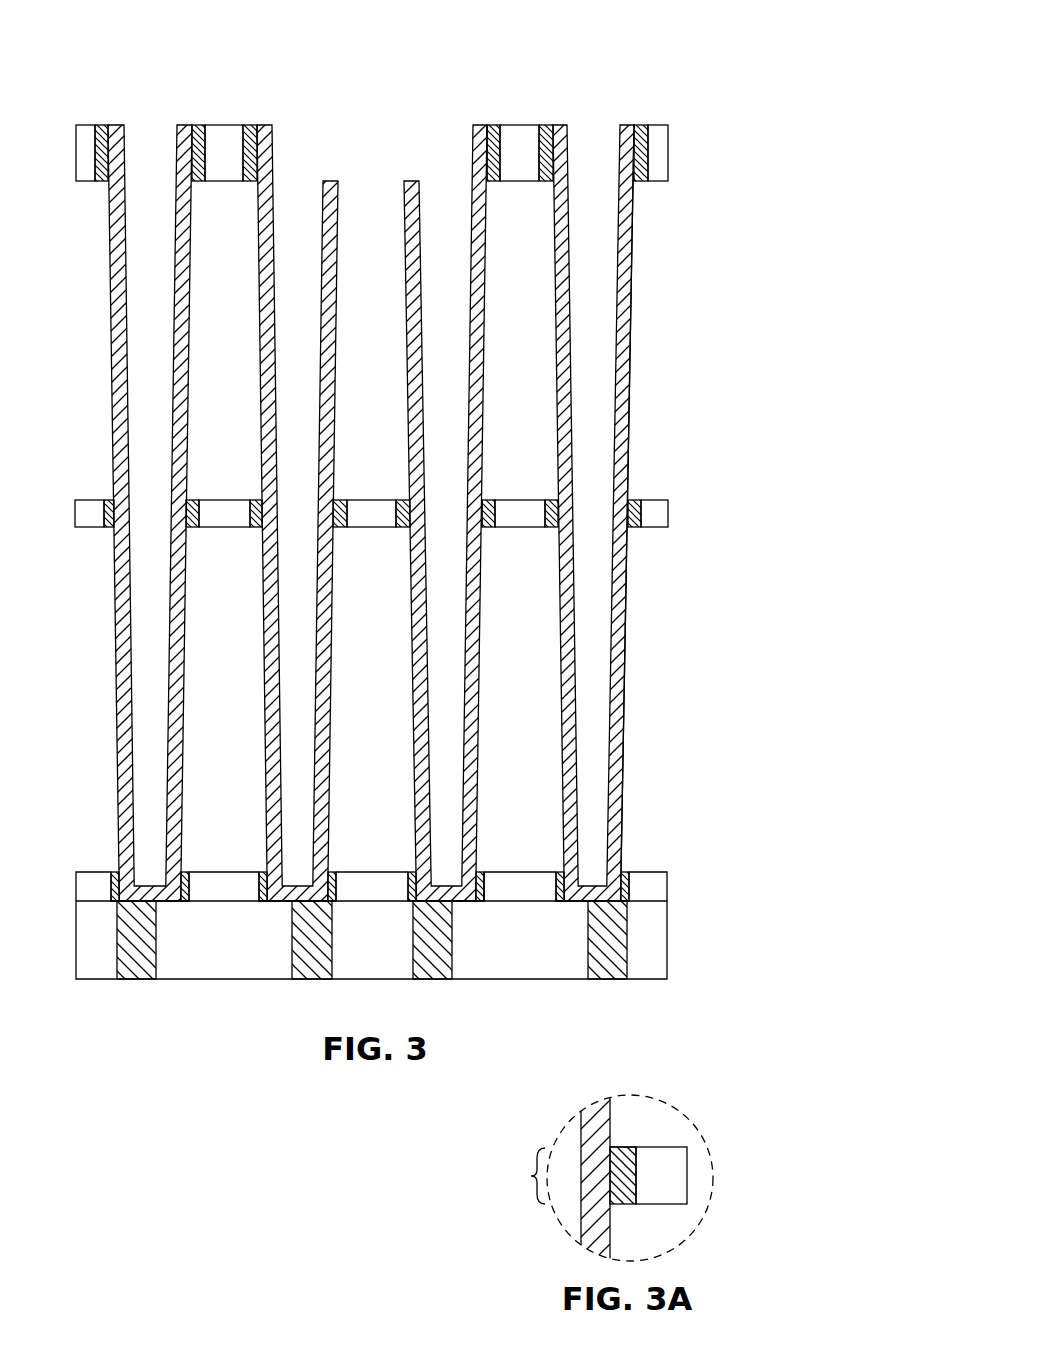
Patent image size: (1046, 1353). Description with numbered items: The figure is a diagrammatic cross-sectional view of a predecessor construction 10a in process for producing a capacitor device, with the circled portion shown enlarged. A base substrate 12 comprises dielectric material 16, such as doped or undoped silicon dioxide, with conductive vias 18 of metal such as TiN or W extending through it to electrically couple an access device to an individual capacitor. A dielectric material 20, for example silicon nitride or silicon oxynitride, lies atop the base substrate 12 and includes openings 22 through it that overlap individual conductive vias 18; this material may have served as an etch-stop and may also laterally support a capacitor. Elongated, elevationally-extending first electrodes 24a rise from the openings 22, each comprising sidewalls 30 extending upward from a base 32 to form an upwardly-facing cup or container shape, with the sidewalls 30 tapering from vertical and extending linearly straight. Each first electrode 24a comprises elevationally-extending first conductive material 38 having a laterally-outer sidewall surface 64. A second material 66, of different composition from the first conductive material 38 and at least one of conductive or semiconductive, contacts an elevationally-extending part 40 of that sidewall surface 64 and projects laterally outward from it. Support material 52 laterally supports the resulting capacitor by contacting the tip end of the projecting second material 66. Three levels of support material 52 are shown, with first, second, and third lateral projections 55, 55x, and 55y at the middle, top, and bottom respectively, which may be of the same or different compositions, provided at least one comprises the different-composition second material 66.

In FIG. 3, the construction 10a is at (678, 70).
In FIG. 3, the base substrate 12 is at (388, 958).
In FIG. 3, the dielectric material 16 is at (81, 969).
In FIG. 3, the conductive vias 18 is at (130, 932).
In FIG. 3, the dielectric material 20 is at (90, 884).
In FIG. 3, the openings 22 is at (191, 881).
In FIG. 3, the first electrode 24a is at (371, 535).
In FIG. 3, the sidewalls 30 is at (378, 537).
In FIG. 3A, the sidewalls 30 is at (563, 1180).
In FIG. 3, the base 32 is at (172, 900).
In FIG. 3, the first conductive material 38 is at (636, 338).
In FIG. 3A, the first conductive material 38 is at (588, 1221).
In FIG. 3A, the elevationally-extending part 40 is at (523, 1176).
In FIG. 3, the support material 52 is at (86, 149).
In FIG. 3A, the support material 52 is at (651, 1189).
In FIG. 3, the first lateral projection 55 is at (491, 497).
In FIG. 3A, the first lateral projection 55 is at (623, 1145).
In FIG. 3, the second lateral projection 55x is at (494, 130).
In FIG. 3, the third lateral projection 55y is at (481, 903).
In FIG. 3A, the laterally-outer sidewall surface 64 is at (622, 1176).
In FIG. 3, the second material 66 is at (104, 128).
In FIG. 3A, the second material 66 is at (644, 1181).